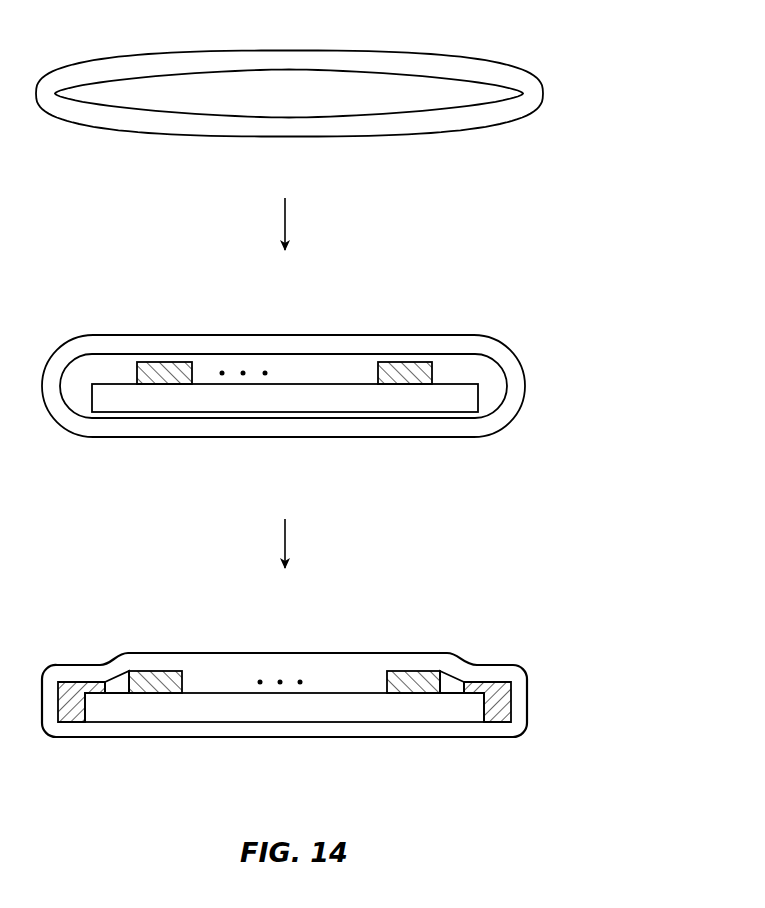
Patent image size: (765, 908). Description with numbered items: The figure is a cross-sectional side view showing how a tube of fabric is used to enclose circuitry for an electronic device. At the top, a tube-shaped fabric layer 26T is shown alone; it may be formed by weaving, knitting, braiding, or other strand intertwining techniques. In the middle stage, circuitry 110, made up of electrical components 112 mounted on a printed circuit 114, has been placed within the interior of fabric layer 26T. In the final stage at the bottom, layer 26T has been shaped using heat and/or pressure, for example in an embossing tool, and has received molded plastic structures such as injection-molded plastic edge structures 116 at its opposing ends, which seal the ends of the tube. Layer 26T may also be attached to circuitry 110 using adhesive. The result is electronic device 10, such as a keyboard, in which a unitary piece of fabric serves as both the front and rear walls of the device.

The electronic device 10 is at (578, 704).
The tube-shaped fabric layer 26T is at (490, 115).
The circuitry 110 is at (444, 374).
The electrical components 112 is at (162, 370).
The printed circuit 114 is at (352, 398).
The injection-molded plastic edge structures 116 is at (73, 683).